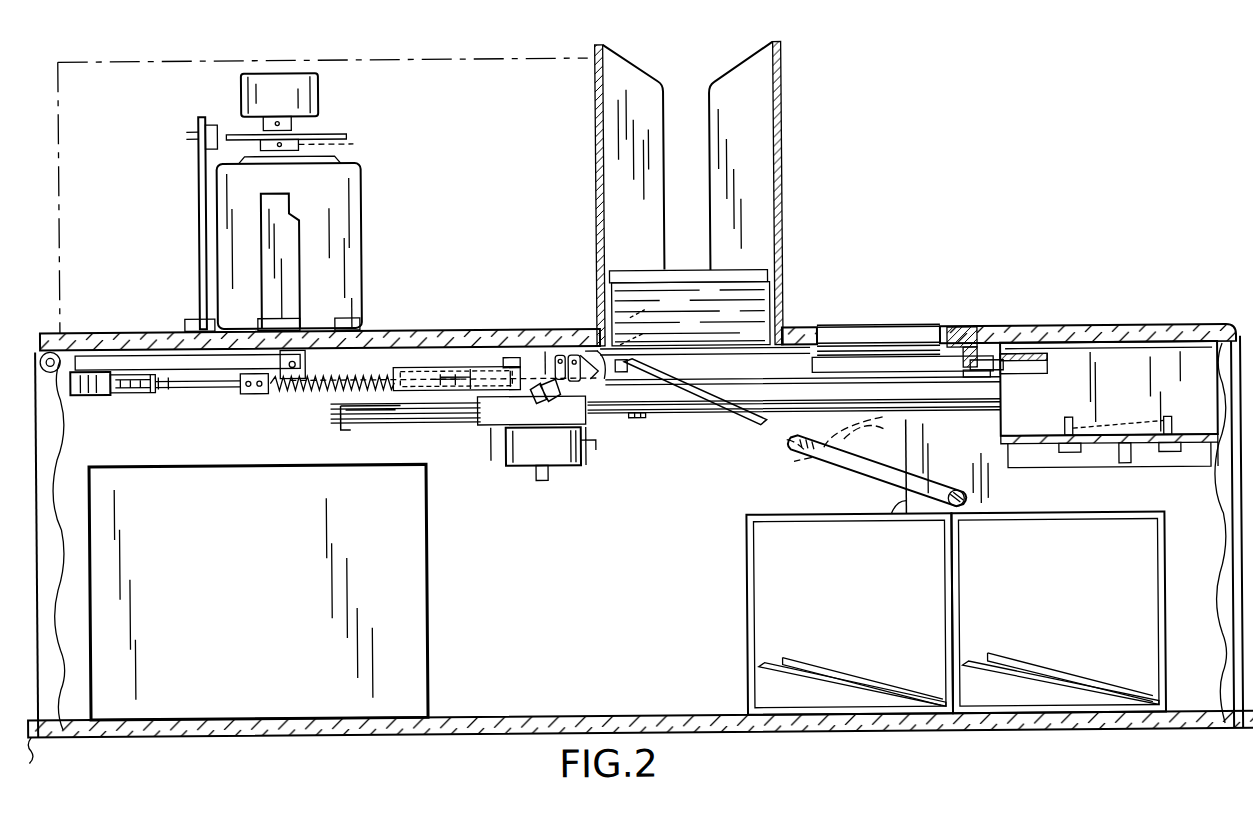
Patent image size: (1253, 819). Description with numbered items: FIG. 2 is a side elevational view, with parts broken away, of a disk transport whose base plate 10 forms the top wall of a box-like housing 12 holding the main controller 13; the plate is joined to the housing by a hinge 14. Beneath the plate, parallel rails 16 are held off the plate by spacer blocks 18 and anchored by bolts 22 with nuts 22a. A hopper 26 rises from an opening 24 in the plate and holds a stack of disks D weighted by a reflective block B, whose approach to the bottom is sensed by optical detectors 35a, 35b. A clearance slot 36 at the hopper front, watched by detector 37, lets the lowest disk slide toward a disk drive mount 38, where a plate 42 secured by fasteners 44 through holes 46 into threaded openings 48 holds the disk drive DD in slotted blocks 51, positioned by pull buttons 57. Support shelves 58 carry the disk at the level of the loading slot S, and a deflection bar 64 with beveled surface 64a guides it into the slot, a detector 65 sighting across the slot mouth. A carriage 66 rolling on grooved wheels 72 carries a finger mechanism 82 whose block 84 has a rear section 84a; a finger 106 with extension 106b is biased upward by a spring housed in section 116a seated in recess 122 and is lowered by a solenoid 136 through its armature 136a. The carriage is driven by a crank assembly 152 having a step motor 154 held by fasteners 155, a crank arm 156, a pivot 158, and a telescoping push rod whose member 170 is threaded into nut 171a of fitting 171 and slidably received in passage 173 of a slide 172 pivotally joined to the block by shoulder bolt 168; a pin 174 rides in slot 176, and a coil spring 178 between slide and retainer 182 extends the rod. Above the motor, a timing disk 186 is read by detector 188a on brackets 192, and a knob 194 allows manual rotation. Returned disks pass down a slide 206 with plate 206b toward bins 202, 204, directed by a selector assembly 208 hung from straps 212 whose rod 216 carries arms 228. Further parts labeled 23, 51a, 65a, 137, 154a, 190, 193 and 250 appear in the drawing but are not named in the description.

The base plate 10 is at (114, 332).
The housing 12 is at (340, 740).
The main controller 13 is at (240, 622).
The hinge 14 is at (36, 346).
The rails 16 is at (428, 424).
The spacer blocks 18 is at (890, 359).
The bolts 22 is at (484, 372).
The nuts 22a is at (470, 428).
The rail 23 is at (762, 382).
The opening 24 is at (600, 327).
The hopper 26 is at (782, 180).
The optical detector 35a is at (654, 311).
The optical detector 35b is at (649, 331).
The diskette clearance slot 36 is at (826, 362).
The optical detector 37 is at (894, 381).
The disk drive mount 38 is at (1040, 460).
The plate 42 is at (1030, 443).
The fasteners 44 is at (1060, 462).
The holes 46 is at (1066, 428).
The threaded openings 48 is at (1098, 428).
The slotted blocks 51 is at (1202, 478).
The tray portion 51a is at (1102, 480).
The spring-loaded pull buttons 57 is at (1128, 472).
The support shelves 58 is at (924, 356).
The deflection bar 64 is at (964, 336).
The beveled surface 64a is at (966, 380).
The detector 65 is at (965, 390).
The stop portion 65a is at (1002, 392).
The carriage 66 is at (390, 448).
The grooved wheels 72 is at (344, 434).
The finger mechanism 82 is at (562, 356).
The block 84 is at (578, 355).
The rear block section 84a is at (543, 446).
The finger 106 is at (611, 368).
The finger extension 106b is at (544, 356).
The housing section 116a is at (610, 423).
The recess 122 is at (286, 410).
The pancake solenoid 136 is at (508, 464).
The solenoid armature 136a is at (564, 469).
The carriage 137 is at (531, 402).
The motorized crank assembly 152 is at (233, 423).
The step motor 154 is at (350, 214).
The bracket 154a is at (308, 366).
The threaded fasteners 155 is at (360, 294).
The crank arm 156 is at (172, 386).
The pivot 158 is at (88, 396).
The shoulder bolt 168 is at (516, 368).
The rod-like member 170 is at (212, 390).
The fitting 171 is at (118, 396).
The nut 171a is at (164, 402).
The slide 172 is at (422, 342).
The longitudinal passage 173 is at (452, 372).
The pin 174 is at (476, 364).
The longitudinal slot 176 is at (510, 368).
The coil spring 178 is at (316, 392).
The retainer 182 is at (254, 396).
The timing disk 186 is at (342, 136).
The optical detector 188a is at (210, 126).
The drive unit 190 is at (181, 62).
The brackets 192 is at (262, 236).
The feet 193 is at (282, 332).
The knob 194 is at (306, 80).
The bin 202 is at (744, 552).
The bin 204 is at (1148, 563).
The slide 206 is at (671, 407).
The slide plate 206b is at (728, 423).
The selector assembly 208 is at (860, 497).
The straps 212 is at (892, 511).
The rod 216 is at (948, 513).
The selector arms 228 is at (808, 460).
The lever 250 is at (650, 377).
The reflective block B is at (634, 279).
The disk D is at (770, 314).
The loading slot S is at (1020, 368).
The disk drive DD is at (1124, 377).